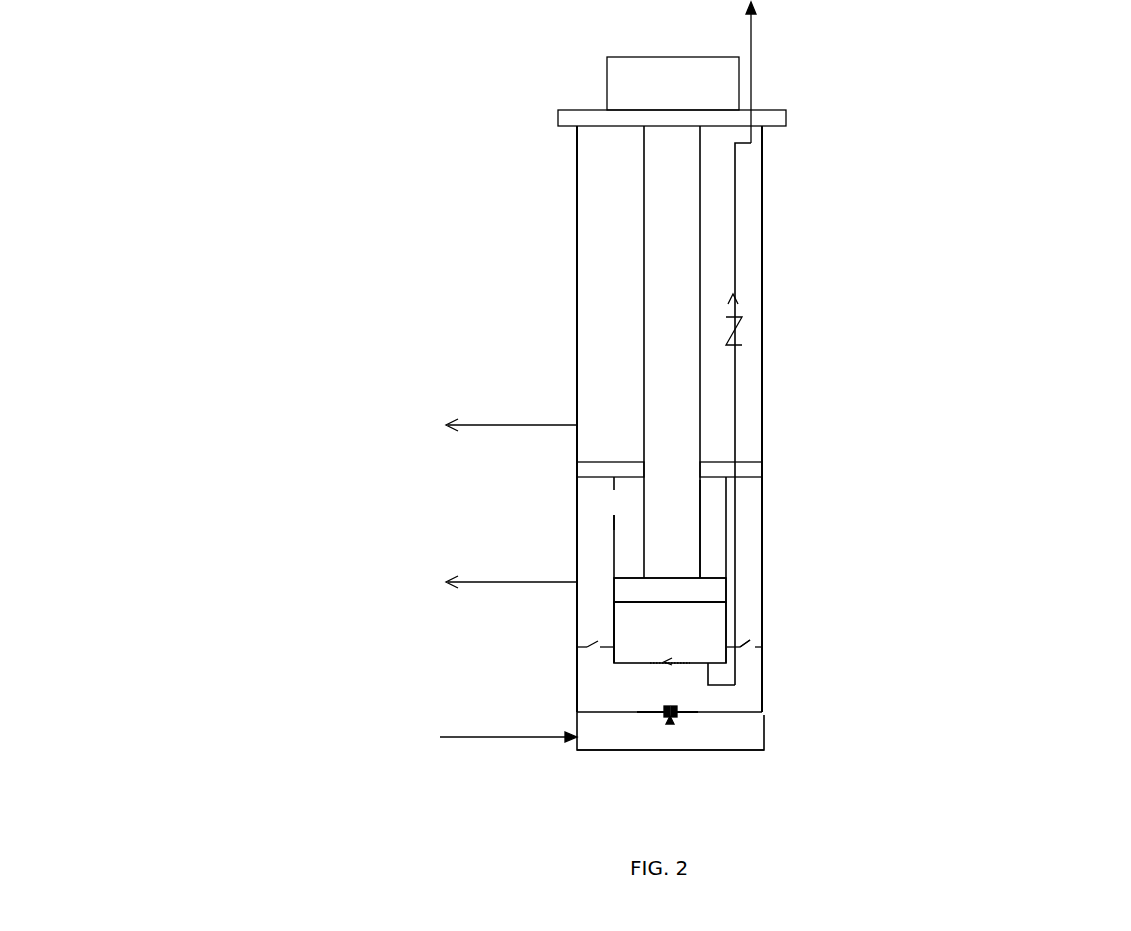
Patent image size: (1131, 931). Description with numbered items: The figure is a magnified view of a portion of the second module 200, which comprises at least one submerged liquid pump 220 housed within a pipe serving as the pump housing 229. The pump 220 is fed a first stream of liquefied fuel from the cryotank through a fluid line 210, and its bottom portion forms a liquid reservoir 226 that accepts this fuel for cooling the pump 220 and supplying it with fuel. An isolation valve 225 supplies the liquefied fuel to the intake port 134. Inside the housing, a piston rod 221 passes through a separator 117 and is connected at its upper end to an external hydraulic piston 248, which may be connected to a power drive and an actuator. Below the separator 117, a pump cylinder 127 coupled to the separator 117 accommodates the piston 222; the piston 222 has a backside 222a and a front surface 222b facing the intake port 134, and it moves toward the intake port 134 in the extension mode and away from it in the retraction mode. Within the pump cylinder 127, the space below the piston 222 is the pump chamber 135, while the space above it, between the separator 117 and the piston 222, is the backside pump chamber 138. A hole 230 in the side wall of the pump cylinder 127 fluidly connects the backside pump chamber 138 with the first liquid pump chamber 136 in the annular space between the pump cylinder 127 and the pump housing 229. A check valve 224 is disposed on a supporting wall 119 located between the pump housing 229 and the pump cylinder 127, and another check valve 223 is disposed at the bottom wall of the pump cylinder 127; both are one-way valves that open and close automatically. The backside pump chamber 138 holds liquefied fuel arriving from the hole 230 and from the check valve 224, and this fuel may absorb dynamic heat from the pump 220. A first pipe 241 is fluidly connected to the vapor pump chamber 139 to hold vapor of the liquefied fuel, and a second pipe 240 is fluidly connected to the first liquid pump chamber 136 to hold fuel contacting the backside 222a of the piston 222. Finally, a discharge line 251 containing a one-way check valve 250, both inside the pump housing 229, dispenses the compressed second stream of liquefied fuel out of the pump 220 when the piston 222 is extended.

The second module 200 is at (224, 86).
The external hydraulic piston 248 is at (620, 87).
The pump 220 is at (673, 63).
The discharge line 251 is at (773, 72).
The vapor pump chamber 139 is at (595, 220).
The pump housing 229 is at (565, 310).
The piston rod 221 is at (672, 352).
The check valve 250 is at (747, 332).
The separator 117 is at (760, 470).
The first pipe 241 is at (511, 407).
The first liquid pump chamber 136 is at (597, 542).
The hole 230 is at (589, 503).
The backside pump chamber 138 is at (707, 562).
The backside of the piston 222a is at (722, 579).
The front surface of the piston 222b is at (724, 603).
The second pipe 240 is at (511, 561).
The piston 222 is at (670, 590).
The pump cylinder 127 is at (617, 628).
The pump chamber 135 is at (702, 619).
The check valve 223 is at (670, 633).
The supporting wall 119 is at (755, 647).
The check valve 224 is at (672, 659).
The intake port 134 is at (740, 703).
The fluid line 210 is at (508, 722).
The isolation valve 225 is at (670, 731).
The liquid reservoir 226 is at (732, 730).